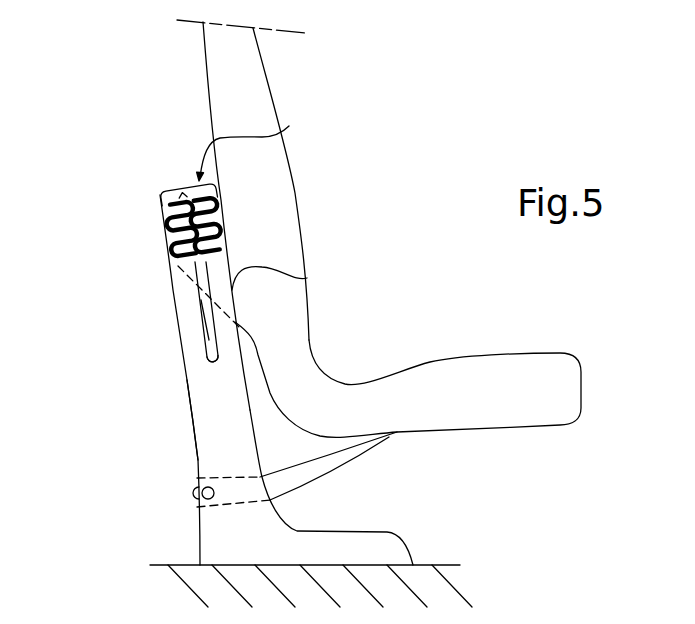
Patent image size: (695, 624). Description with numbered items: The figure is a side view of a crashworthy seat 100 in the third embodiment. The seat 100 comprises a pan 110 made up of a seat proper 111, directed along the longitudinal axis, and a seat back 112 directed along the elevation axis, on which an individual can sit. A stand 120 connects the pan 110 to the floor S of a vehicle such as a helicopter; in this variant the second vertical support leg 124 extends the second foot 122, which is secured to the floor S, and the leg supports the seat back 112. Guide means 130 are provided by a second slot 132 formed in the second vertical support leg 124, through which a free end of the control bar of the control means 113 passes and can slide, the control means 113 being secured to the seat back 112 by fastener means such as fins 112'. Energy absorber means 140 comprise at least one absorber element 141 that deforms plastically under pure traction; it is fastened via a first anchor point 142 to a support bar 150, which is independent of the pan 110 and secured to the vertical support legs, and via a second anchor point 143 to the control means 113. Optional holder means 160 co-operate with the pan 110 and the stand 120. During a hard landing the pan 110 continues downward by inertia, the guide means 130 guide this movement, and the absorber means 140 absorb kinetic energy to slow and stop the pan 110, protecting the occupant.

The crashworthy seat 100 is at (448, 122).
The pan 110 is at (318, 320).
The seat proper 111 is at (523, 362).
The seat back 112 is at (299, 184).
The fins 112' is at (305, 265).
The control means 113 is at (177, 300).
The stand 120 is at (152, 537).
The second foot 122 is at (387, 537).
The second vertical support leg 124 is at (196, 420).
The guide means 130 is at (203, 363).
The second slot 132 is at (206, 325).
The energy absorber means 140 is at (150, 201).
The absorber element 141 is at (166, 243).
The first anchor point 142 is at (176, 191).
The second anchor point 143 is at (200, 271).
The support bar 150 is at (264, 145).
The holder means 160 is at (373, 465).
The floor S is at (445, 563).